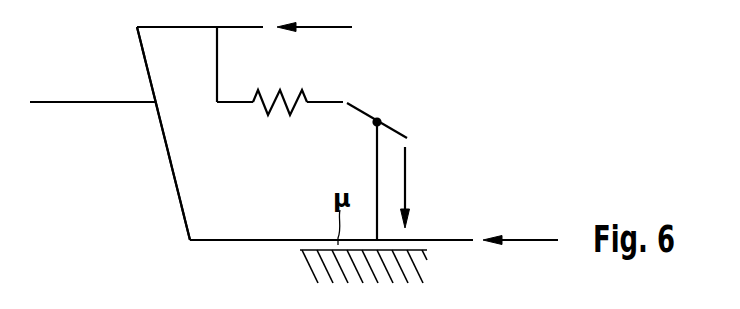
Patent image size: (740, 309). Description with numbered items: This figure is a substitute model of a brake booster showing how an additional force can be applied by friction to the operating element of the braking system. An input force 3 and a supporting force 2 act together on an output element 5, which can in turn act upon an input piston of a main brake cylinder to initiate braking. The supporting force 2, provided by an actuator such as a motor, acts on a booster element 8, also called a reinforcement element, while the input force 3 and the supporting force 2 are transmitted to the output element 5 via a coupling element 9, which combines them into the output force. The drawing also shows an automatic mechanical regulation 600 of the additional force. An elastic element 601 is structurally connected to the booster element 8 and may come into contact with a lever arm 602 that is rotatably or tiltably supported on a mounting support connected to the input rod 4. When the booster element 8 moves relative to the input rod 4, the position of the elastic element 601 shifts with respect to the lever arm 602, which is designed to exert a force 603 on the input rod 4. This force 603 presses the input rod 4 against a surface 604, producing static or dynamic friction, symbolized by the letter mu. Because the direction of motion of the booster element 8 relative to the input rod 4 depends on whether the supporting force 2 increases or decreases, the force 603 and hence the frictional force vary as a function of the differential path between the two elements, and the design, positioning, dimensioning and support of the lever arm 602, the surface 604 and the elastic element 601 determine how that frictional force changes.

The supporting force 2 is at (330, 28).
The input force 3 is at (532, 240).
The input rod 4 is at (257, 240).
The output element 5 is at (93, 103).
The booster element 8 is at (187, 28).
The coupling element 9 is at (177, 180).
The automatic mechanical regulation 600 is at (433, 108).
The elastic element 601 is at (272, 110).
The lever arm 602 is at (371, 118).
The force 603 is at (405, 173).
The surface 604 is at (305, 272).